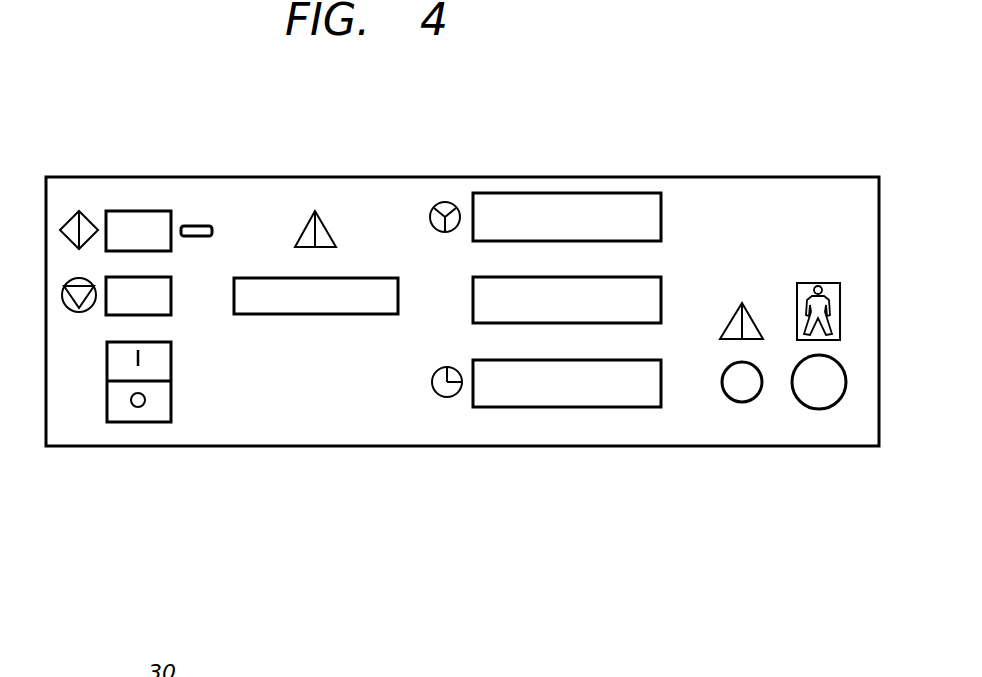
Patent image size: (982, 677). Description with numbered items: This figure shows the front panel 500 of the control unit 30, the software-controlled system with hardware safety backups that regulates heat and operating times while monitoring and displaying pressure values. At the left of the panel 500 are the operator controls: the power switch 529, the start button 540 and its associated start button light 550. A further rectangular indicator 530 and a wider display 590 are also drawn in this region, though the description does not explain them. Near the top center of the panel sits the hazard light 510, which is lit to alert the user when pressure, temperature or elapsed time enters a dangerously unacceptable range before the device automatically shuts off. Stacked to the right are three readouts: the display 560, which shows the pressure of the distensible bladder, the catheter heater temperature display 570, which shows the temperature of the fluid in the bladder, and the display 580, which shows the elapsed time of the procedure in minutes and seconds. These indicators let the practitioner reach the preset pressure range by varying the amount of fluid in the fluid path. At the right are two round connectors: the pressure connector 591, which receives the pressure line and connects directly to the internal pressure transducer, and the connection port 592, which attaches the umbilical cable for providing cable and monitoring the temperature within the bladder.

The control unit 30 is at (676, 143).
The front panel 500 is at (793, 218).
The hazard light 510 is at (308, 222).
The power switch 529 is at (157, 408).
The indicator display 530 is at (155, 297).
The start button 540 is at (131, 217).
The start button light 550 is at (198, 226).
The pressure display 560 is at (563, 205).
The catheter heater temperature display 570 is at (638, 295).
The elapsed time display 580 is at (507, 387).
The message display 590 is at (319, 295).
The pressure connector 591 is at (742, 385).
The connection port 592 is at (820, 387).